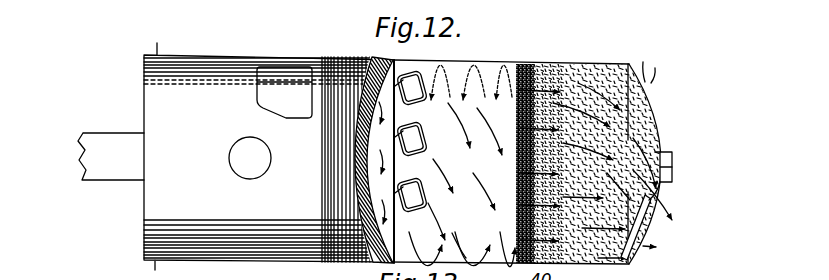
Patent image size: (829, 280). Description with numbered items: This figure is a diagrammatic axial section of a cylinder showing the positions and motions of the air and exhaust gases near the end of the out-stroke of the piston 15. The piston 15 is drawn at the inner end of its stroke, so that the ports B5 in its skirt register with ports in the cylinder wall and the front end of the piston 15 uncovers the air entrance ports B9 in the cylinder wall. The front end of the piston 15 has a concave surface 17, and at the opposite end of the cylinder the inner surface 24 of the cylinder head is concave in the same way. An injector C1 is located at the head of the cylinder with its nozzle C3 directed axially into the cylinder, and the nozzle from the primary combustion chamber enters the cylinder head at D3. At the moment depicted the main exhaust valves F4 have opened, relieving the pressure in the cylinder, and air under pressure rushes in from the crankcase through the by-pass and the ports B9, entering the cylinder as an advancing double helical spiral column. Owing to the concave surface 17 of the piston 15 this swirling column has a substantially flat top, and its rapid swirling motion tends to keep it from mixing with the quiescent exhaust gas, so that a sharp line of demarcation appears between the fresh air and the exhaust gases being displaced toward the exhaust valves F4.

The piston 15 is at (386, 156).
The concave surface 17 is at (364, 147).
The inner surface of the cylinder head 24 is at (653, 122).
The ports B5 is at (254, 100).
The air entrance ports B9 is at (420, 100).
The nozzle entry point in cylinder head D3 is at (647, 83).
The injector C1 is at (670, 153).
The nozzle C3 is at (672, 166).
The main exhaust valves F4 is at (650, 220).